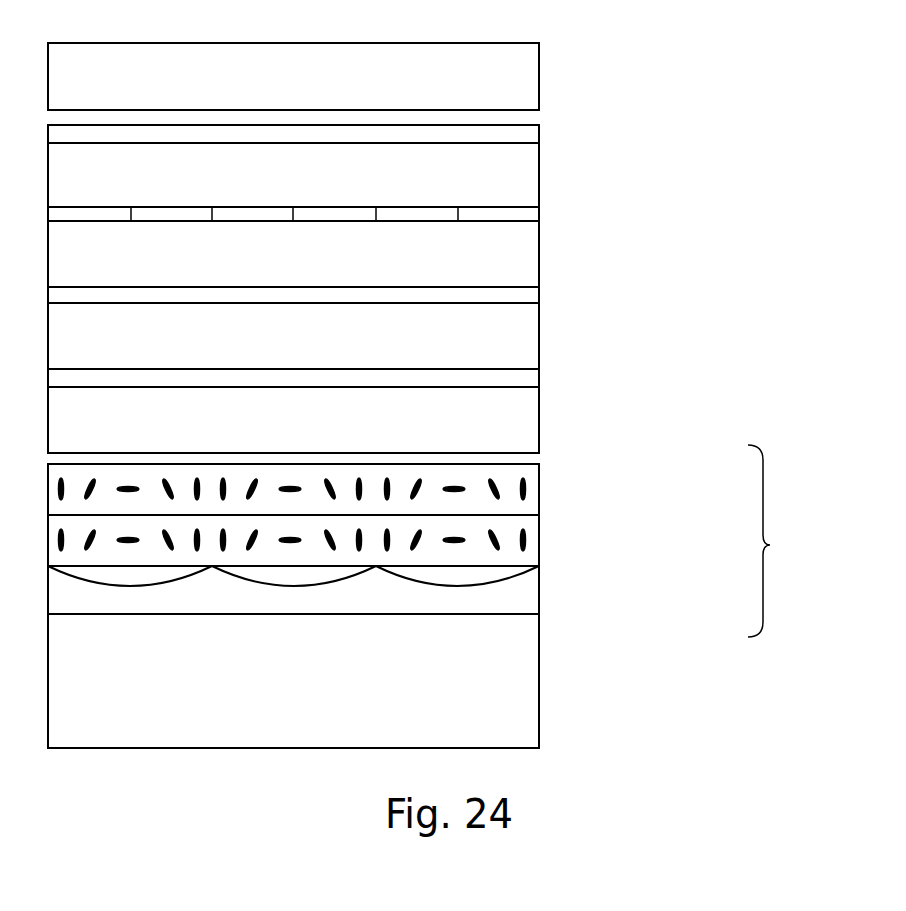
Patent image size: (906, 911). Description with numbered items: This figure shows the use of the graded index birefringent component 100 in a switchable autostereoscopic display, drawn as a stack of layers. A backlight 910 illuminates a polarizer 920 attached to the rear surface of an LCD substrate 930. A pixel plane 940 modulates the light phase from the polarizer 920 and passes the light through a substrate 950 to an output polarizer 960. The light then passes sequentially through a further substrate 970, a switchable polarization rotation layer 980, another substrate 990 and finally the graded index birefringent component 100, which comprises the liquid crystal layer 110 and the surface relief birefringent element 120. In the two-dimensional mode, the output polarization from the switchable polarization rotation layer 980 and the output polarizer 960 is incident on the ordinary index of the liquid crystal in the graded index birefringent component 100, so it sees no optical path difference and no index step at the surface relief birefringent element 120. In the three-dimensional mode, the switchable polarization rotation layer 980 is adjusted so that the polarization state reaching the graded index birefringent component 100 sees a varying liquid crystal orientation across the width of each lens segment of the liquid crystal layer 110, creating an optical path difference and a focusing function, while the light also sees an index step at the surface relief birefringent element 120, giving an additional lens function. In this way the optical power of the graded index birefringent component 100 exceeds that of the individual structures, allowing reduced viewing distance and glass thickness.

The backlight 910 is at (539, 74).
The polarizer 920 is at (539, 133).
The LCD substrate 930 is at (539, 175).
The pixel plane 940 is at (539, 215).
The substrate 950 is at (539, 251).
The output polarizer 960 is at (539, 293).
The substrate 970 is at (539, 335).
The switchable polarization rotation layer 980 is at (539, 376).
The substrate 990 is at (539, 418).
The liquid crystal layer 110 is at (539, 489).
The surface relief birefringent element 120 is at (539, 668).
The graded index birefringent component 100 is at (434, 596).